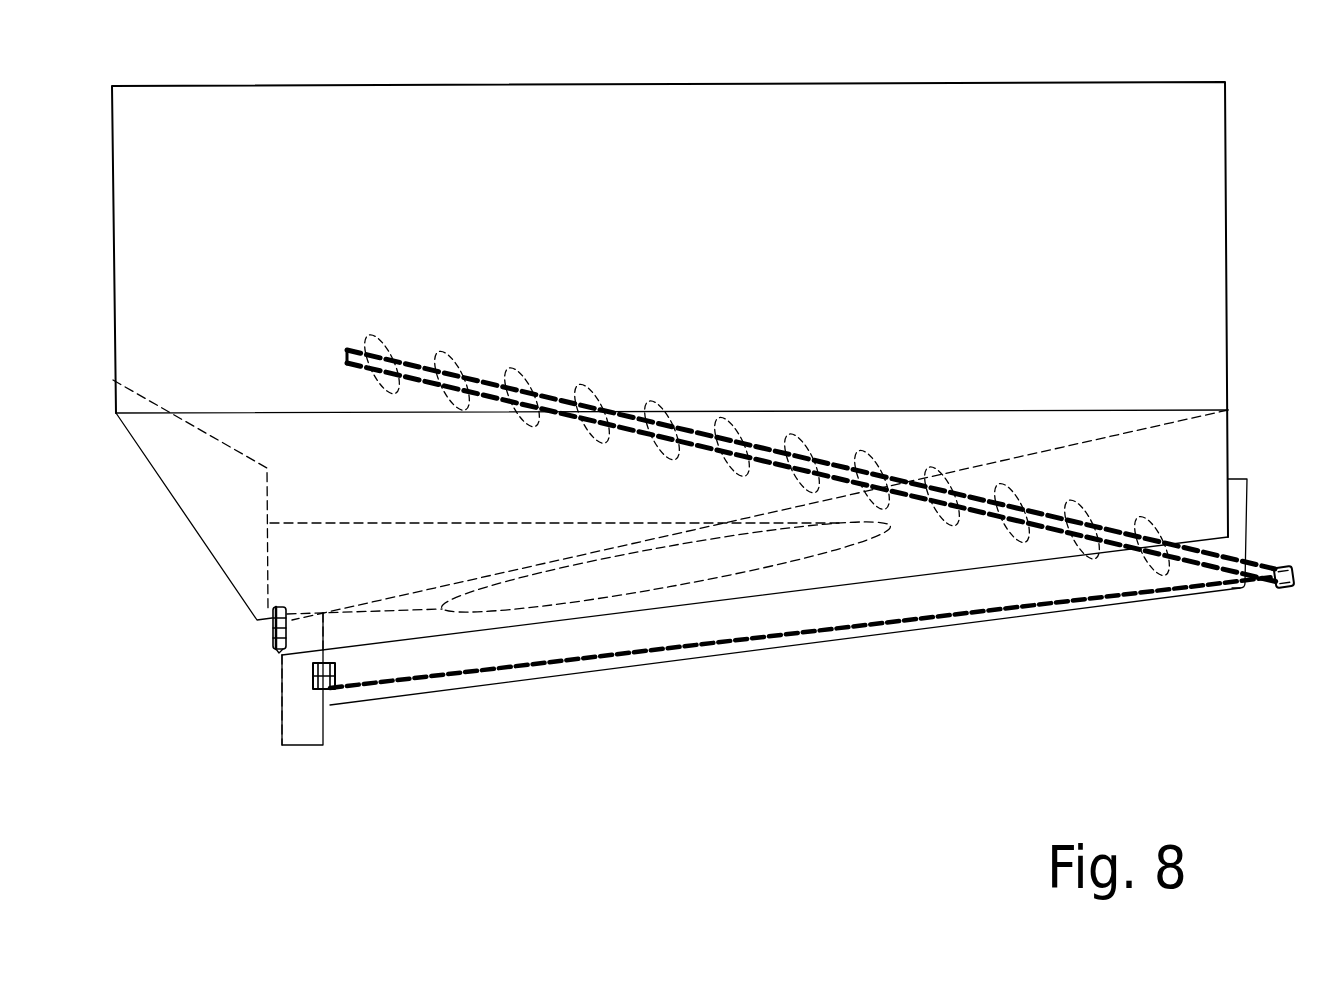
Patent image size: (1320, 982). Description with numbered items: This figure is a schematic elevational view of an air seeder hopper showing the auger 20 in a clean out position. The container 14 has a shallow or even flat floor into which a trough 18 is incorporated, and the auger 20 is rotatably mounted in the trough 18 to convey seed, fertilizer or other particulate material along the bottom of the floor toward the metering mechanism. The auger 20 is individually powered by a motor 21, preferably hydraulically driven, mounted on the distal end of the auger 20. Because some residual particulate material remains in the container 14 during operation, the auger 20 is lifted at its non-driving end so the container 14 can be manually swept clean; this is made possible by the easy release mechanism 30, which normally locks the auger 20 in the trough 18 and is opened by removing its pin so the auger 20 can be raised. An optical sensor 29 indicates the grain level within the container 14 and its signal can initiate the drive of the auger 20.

The container 14 is at (837, 83).
The trough 18 is at (1053, 611).
The auger 20 is at (907, 498).
The motor 21 is at (1295, 586).
The optical sensor 29 is at (270, 625).
The easy release mechanism 30 is at (325, 703).